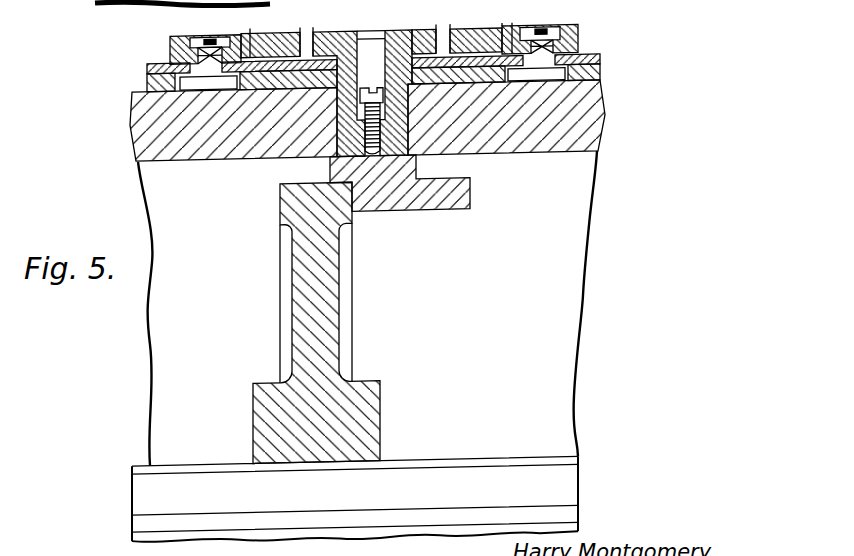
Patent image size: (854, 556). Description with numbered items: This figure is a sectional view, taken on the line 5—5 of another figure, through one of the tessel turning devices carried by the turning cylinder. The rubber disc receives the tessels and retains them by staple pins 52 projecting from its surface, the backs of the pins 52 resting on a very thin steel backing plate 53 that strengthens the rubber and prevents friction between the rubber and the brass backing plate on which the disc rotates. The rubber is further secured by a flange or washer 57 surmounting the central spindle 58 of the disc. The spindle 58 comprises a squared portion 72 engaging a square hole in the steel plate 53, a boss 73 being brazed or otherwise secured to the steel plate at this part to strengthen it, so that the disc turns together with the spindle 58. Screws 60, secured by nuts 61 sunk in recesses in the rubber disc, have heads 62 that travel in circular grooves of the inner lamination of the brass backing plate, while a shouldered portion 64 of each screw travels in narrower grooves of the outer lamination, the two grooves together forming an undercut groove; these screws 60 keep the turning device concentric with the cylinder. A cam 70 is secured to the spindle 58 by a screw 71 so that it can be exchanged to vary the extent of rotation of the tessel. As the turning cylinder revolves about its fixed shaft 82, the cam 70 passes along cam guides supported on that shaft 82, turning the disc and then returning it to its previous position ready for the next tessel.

The section line 5 is at (365, 50).
The staple pins 52 is at (400, 56).
The steel backing plate 53 is at (273, 55).
The flange or washer 57 is at (389, 42).
The central spindle 58 is at (355, 55).
The screws 60 is at (188, 40).
The nuts 61 is at (202, 34).
The heads 62 is at (147, 65).
The shouldered portion 64 is at (201, 67).
The cam 70 is at (470, 185).
The screw 71 is at (383, 117).
The squared portion 72 is at (263, 148).
The boss 73 is at (455, 27).
The fixed shaft 82 is at (443, 487).